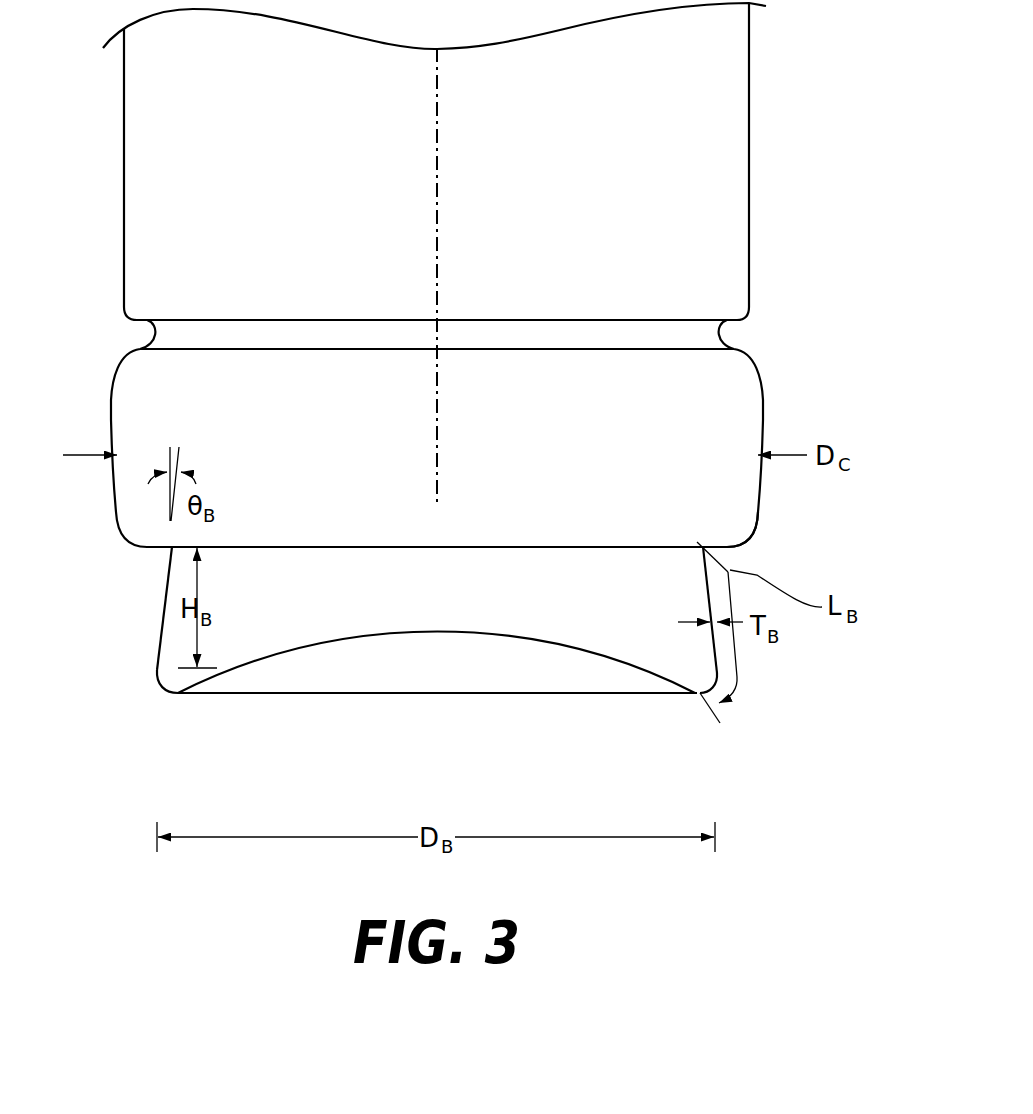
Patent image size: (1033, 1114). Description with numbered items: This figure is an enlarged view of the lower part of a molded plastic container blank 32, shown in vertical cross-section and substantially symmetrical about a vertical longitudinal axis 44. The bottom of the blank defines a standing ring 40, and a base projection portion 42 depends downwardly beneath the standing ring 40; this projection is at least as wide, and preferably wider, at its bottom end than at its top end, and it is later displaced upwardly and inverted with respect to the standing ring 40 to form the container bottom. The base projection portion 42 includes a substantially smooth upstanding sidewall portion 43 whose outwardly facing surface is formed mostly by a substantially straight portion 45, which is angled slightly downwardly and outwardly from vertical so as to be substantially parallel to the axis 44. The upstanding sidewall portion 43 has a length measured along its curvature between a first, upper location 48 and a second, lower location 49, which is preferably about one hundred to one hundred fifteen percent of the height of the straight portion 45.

The container blank 32 is at (836, 306).
The standing ring 40 is at (747, 533).
The base projection portion 42 is at (140, 699).
The upstanding sidewall portion 43 is at (157, 622).
The vertical axis 44 is at (438, 198).
The substantially straight portion 45 is at (158, 651).
The first, upper location 48 is at (700, 550).
The second, lower location 49 is at (700, 694).